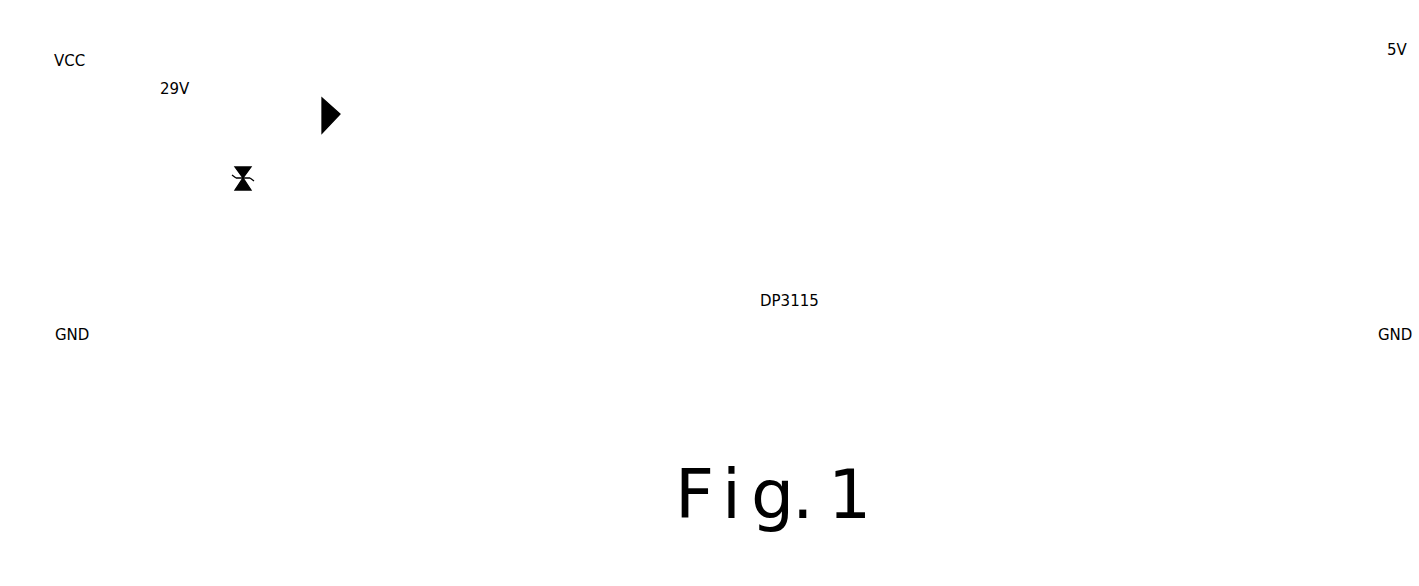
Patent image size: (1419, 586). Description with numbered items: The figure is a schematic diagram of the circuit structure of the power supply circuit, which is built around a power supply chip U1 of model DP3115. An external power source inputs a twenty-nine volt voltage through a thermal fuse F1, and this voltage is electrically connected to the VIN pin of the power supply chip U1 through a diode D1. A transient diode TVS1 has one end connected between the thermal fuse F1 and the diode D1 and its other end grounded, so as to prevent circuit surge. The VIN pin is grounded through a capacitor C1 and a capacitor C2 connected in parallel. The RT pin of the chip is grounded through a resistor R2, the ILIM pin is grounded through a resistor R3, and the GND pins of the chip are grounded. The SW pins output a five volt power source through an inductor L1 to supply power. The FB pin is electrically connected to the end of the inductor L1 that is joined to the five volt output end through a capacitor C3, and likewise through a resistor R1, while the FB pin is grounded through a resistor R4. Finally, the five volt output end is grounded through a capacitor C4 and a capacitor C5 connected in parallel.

The thermal fuse F1 is at (124, 115).
The transient diode TVS1 is at (264, 201).
The diode D1 is at (339, 115).
The capacitor C1 is at (447, 180).
The capacitor C2 is at (503, 201).
The resistor R2 is at (669, 221).
The resistor R3 is at (702, 239).
The power supply chip U1 is at (919, 184).
The inductor L1 is at (1044, 112).
The resistor R1 is at (1080, 151).
The resistor R4 is at (1078, 240).
The capacitor C3 is at (1134, 185).
The capacitor C4 is at (1206, 201).
The capacitor C5 is at (1261, 201).